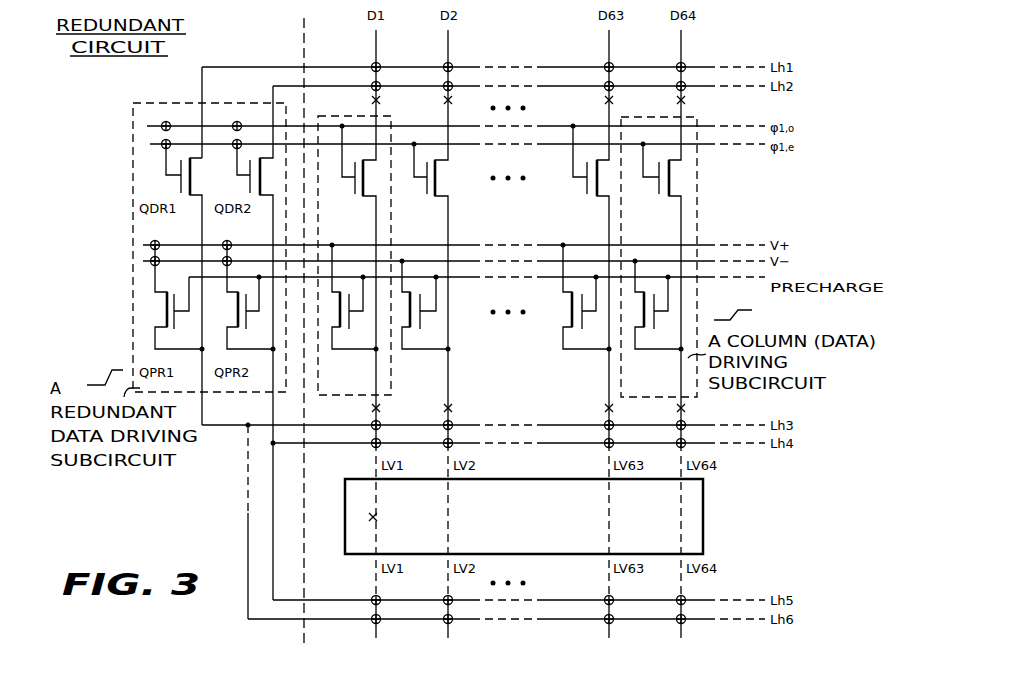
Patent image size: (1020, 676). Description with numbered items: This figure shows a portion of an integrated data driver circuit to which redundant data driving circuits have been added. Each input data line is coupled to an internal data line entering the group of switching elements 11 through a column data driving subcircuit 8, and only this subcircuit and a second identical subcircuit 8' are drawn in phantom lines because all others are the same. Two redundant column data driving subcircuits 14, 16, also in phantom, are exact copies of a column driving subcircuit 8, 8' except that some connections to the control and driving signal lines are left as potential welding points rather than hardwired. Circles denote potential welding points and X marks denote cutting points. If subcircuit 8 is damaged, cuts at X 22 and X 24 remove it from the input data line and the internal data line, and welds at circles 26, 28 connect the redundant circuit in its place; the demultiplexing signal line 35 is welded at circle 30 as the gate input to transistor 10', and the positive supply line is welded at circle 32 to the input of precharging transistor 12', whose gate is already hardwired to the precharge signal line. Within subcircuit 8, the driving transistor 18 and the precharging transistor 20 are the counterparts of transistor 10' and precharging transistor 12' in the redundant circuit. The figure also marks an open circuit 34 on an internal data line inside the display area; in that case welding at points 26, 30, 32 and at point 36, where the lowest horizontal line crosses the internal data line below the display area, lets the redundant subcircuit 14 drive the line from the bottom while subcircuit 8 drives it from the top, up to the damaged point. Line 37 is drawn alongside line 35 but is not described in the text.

The column data driving subcircuit 8 is at (353, 244).
The column data driving subcircuit 8' is at (678, 236).
The transistor 10' is at (136, 284).
The group of switching elements 11 is at (704, 497).
The precharging transistor 12' is at (136, 298).
The redundant column data driving subcircuit 14 is at (133, 157).
The redundant column data driving subcircuit 16 is at (243, 100).
The column driving transistor 18 is at (380, 175).
The column precharge transistor 20 is at (346, 338).
The cutting point 22 is at (374, 94).
The cutting point 24 is at (382, 408).
The welding point 26 is at (379, 64).
The welding point 28 is at (372, 447).
The welding point 30 is at (162, 123).
The welding point 32 is at (151, 244).
The open circuit point 34 is at (378, 517).
The demultiplexing signal line 35 is at (705, 126).
The welding point 36 is at (372, 624).
The even clock line phi1,e 37 is at (705, 146).